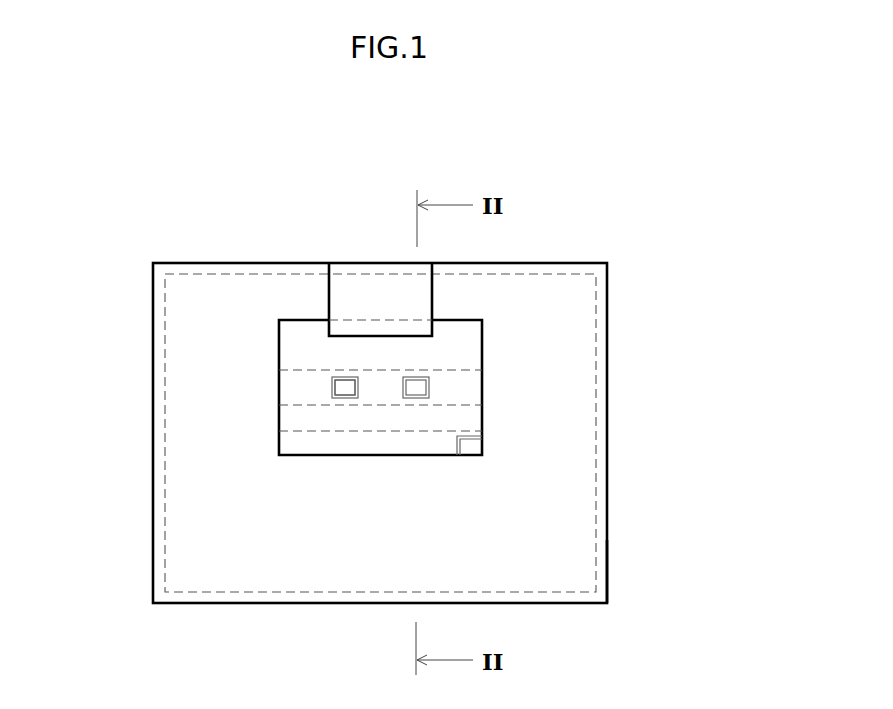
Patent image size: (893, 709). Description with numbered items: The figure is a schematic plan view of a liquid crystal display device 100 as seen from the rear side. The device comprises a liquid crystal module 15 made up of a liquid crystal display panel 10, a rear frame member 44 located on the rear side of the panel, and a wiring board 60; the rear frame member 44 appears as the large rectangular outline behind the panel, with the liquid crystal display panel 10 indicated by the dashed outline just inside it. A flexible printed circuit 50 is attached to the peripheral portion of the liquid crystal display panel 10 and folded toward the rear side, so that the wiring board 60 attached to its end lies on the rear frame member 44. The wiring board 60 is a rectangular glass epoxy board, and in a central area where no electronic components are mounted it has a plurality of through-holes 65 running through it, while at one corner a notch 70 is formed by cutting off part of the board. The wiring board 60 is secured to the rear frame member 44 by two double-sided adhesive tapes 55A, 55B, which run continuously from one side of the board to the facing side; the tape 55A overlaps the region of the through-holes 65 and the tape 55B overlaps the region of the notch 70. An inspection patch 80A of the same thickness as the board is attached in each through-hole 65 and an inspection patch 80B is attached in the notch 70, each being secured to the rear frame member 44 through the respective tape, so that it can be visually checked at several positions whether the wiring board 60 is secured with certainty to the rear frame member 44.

The liquid crystal display device 100 is at (676, 194).
The liquid crystal display panel 10 is at (597, 363).
The liquid crystal module 15 is at (151, 498).
The rear frame member 44 is at (608, 565).
The flexible printed circuit 50 is at (418, 297).
The double-sided adhesive tape 55A is at (288, 386).
The double-sided adhesive tape 55B is at (290, 440).
The wiring board 60 is at (277, 420).
The through-holes 65 is at (332, 388).
The notch 70 is at (458, 437).
The inspection patch 80A is at (345, 390).
The inspection patch 80B is at (468, 445).